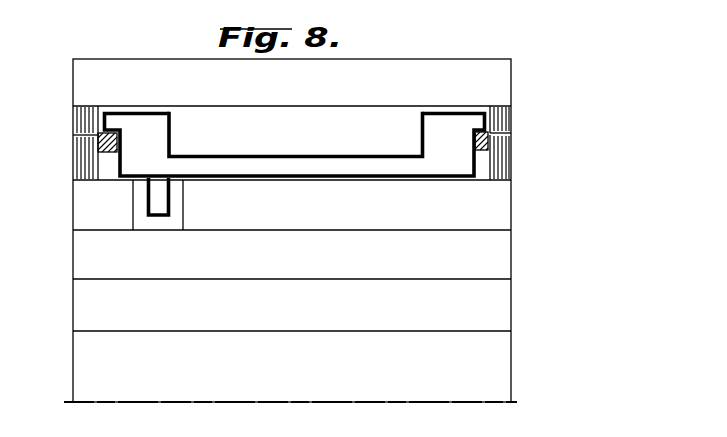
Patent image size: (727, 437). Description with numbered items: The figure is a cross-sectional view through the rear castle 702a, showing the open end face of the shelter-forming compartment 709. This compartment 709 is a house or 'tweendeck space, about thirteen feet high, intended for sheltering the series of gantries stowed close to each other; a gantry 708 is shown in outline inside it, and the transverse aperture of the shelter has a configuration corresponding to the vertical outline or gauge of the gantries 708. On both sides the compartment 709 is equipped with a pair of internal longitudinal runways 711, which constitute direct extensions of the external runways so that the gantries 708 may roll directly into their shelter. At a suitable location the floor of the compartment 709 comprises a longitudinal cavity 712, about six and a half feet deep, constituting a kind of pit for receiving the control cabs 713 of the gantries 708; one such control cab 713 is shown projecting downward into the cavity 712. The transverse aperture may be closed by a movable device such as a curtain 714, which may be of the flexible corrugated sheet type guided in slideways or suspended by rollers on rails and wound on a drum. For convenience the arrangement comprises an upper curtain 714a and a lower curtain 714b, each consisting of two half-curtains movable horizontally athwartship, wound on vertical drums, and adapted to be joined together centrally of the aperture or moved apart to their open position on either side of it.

The rear castle 702a is at (433, 54).
The curtain 714 is at (66, 138).
The upper curtain 714a is at (505, 119).
The lower curtain 714b is at (505, 156).
The internal longitudinal runway 711 is at (108, 153).
The compartment 709 is at (295, 145).
The gantry 708 is at (340, 159).
The control cab 713 is at (160, 200).
The longitudinal cavity 712 is at (150, 220).